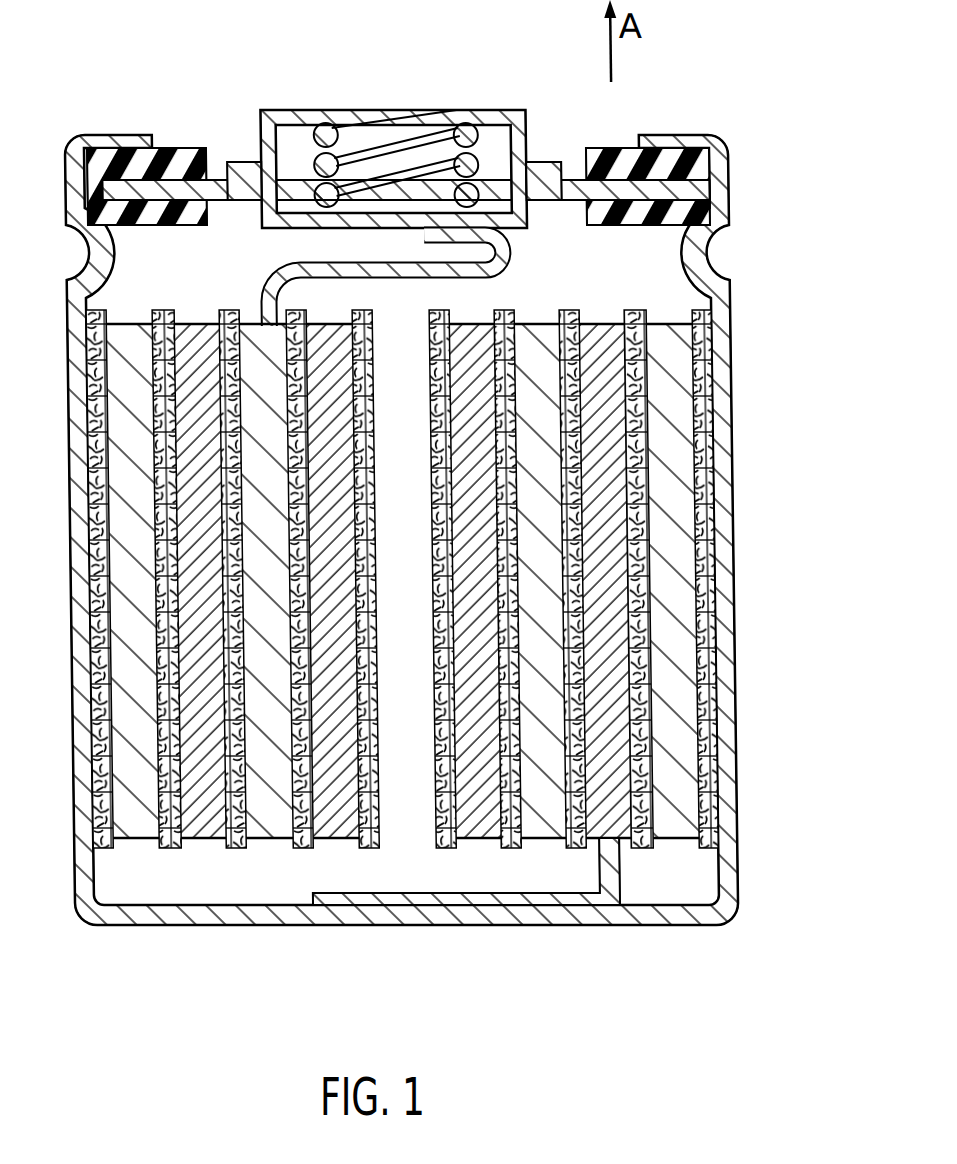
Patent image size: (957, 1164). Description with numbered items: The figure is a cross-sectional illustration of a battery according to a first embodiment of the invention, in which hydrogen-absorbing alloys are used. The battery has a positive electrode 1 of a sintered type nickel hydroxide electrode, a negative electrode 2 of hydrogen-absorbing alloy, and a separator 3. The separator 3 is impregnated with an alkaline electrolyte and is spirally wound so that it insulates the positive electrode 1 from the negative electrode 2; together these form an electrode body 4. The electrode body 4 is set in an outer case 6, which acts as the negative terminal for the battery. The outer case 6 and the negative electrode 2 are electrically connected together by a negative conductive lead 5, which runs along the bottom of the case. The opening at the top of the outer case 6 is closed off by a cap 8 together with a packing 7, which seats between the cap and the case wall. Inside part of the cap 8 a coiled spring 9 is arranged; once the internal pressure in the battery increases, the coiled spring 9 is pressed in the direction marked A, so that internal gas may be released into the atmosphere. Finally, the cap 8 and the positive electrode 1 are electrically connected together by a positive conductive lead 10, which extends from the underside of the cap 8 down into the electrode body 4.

The positive electrode 1 is at (670, 762).
The negative electrode 2 is at (604, 590).
The separator 3 is at (639, 667).
The electrode body 4 is at (491, 579).
The negative conductive lead 5 is at (560, 902).
The outer case 6 is at (717, 855).
The packing 7 is at (624, 150).
The cap 8 is at (525, 114).
The coiled spring 9 is at (418, 148).
The positive conductive lead 10 is at (266, 300).